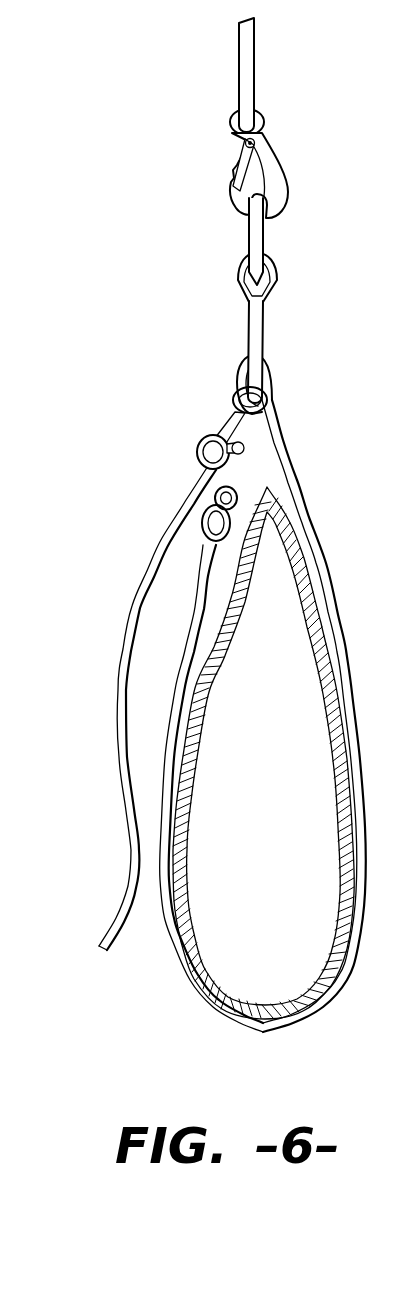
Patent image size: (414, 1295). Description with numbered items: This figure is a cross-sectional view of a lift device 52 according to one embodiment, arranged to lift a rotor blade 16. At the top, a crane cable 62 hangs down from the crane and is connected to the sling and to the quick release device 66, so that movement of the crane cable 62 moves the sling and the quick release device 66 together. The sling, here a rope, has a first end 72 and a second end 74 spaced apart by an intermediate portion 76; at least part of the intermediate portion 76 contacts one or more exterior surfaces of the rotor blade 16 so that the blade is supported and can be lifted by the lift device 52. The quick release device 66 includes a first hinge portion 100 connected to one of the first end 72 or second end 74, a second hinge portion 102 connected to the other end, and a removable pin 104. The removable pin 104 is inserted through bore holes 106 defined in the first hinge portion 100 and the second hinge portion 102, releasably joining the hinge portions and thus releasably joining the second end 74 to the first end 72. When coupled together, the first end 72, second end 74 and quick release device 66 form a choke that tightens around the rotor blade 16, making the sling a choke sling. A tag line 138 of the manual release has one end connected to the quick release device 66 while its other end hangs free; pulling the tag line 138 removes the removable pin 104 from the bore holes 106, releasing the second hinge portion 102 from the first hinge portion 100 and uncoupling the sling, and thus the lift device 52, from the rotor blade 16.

The crane cable 62 is at (258, 67).
The lift device 52 is at (183, 218).
The first end 72 is at (248, 332).
The first hinge portion 100 is at (233, 402).
The quick release device 66 is at (102, 408).
The bore holes 106 is at (236, 416).
The removable pin 104 is at (197, 447).
The second hinge portion 102 is at (207, 463).
The second end 74 is at (205, 552).
The tag line 138 is at (115, 700).
The rotor blade 16 is at (288, 732).
The intermediate portion 76 is at (286, 448).